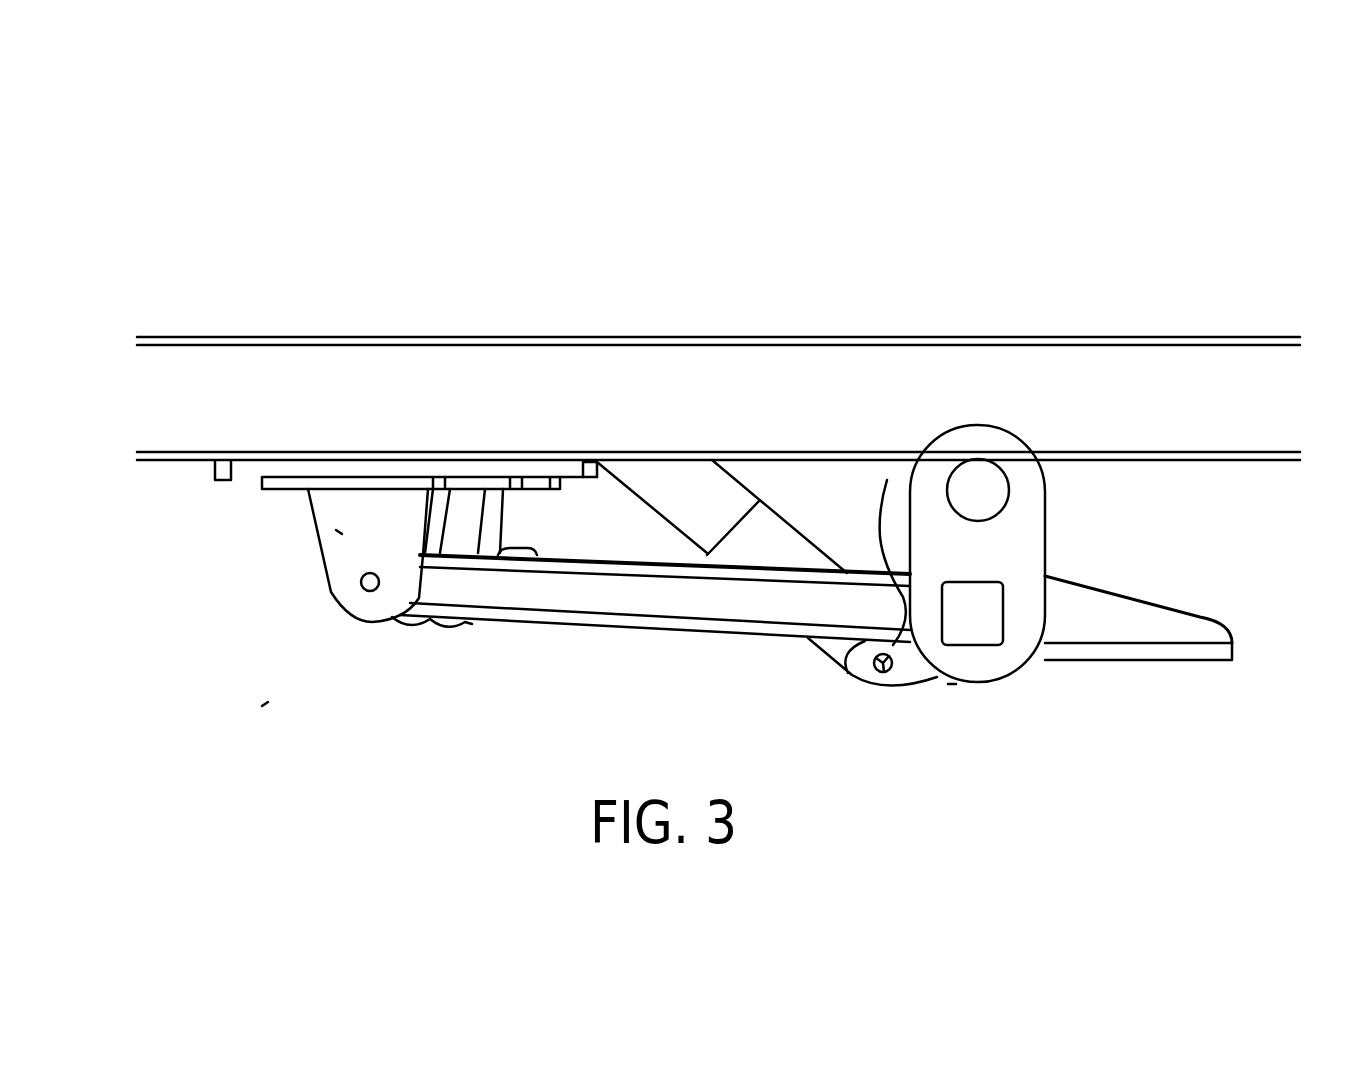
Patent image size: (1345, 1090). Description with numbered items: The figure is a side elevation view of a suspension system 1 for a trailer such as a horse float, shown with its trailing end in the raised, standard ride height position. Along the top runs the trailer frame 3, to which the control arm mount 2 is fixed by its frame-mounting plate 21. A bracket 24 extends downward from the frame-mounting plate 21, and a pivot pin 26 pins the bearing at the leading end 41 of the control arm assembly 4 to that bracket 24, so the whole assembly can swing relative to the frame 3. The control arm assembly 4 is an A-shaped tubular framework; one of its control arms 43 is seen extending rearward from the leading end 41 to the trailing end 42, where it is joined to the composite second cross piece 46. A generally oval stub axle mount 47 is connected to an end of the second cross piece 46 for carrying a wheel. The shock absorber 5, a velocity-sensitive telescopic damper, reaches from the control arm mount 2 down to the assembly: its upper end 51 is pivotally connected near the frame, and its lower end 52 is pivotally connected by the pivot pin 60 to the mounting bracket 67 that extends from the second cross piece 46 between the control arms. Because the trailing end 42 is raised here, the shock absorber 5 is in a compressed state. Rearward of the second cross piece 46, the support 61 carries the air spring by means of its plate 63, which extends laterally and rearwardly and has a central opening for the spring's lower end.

The suspension system 1 is at (262, 706).
The control arm mount 2 is at (310, 577).
The frame 3 is at (213, 423).
The control arm assembly 4 is at (609, 636).
The shock absorber 5 is at (770, 490).
The frame-mounting plate 21 is at (263, 480).
The bracket 24 is at (368, 620).
The pivot pin 26 is at (340, 532).
The leading end 41 is at (322, 612).
The trailing end 42 is at (952, 686).
The control arm 43 is at (768, 613).
The second cross piece 46 is at (980, 627).
The stub axle mount 47 is at (1040, 438).
The upper end 51 is at (642, 470).
The lower end 52 is at (852, 673).
The pivot pin 60 is at (880, 677).
The support 61 is at (1203, 630).
The plate 63 is at (1200, 648).
The mounting bracket 67 is at (887, 480).